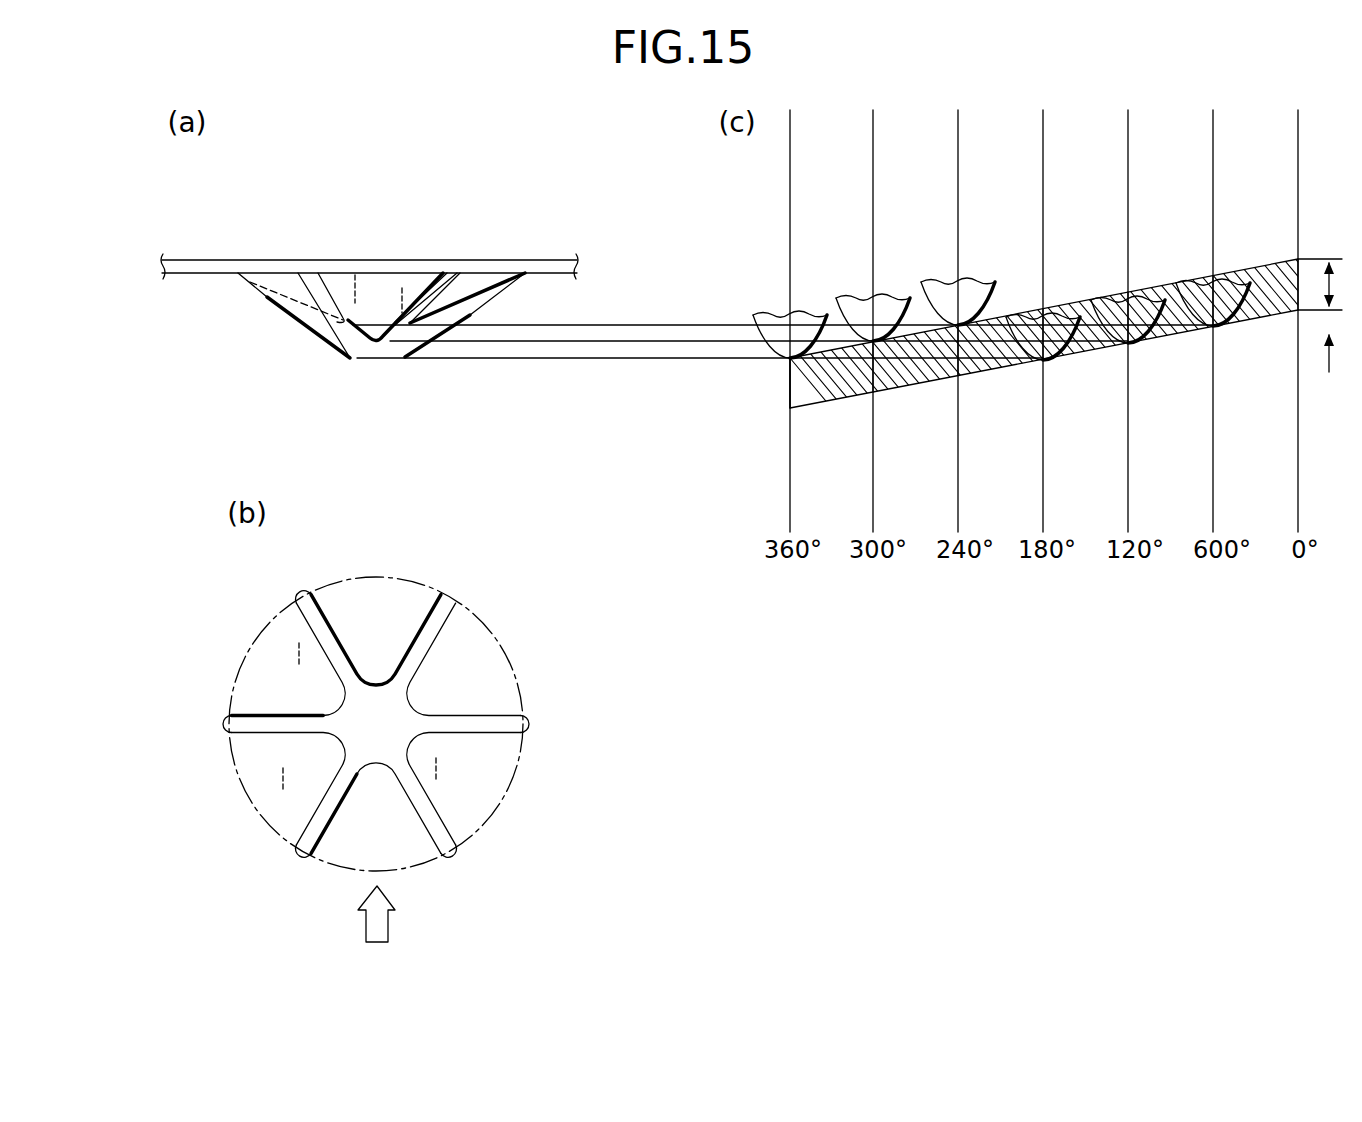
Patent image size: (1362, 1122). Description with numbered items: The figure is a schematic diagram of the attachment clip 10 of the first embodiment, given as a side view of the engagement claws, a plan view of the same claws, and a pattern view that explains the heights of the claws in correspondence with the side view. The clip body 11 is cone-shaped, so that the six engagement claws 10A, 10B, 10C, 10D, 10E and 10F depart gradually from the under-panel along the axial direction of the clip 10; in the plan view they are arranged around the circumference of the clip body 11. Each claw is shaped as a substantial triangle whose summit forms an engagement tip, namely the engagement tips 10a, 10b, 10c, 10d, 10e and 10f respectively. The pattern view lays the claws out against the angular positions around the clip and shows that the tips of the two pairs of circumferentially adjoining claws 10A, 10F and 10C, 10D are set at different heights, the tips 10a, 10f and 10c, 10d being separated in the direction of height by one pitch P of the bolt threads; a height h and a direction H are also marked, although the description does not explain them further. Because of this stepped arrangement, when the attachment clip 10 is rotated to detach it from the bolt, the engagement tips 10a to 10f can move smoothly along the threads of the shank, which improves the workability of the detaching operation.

The attachment clip 10 is at (500, 197).
The clip body 11 is at (420, 260).
The engagement claw 10A is at (482, 300).
The engagement claw 10B is at (360, 338).
The engagement claw 10C is at (318, 340).
The engagement claw 10D is at (270, 293).
The engagement claw 10E is at (371, 612).
The engagement claw 10F is at (460, 328).
The engagement tip 10a is at (1213, 328).
The engagement tip 10b is at (1128, 345).
The engagement tip 10c is at (1043, 362).
The engagement tip 10d is at (958, 327).
The engagement tip 10e is at (873, 343).
The engagement tip 10f is at (790, 360).
The pitch P is at (1329, 284).
The height h is at (1344, 353).
The direction H is at (365, 915).